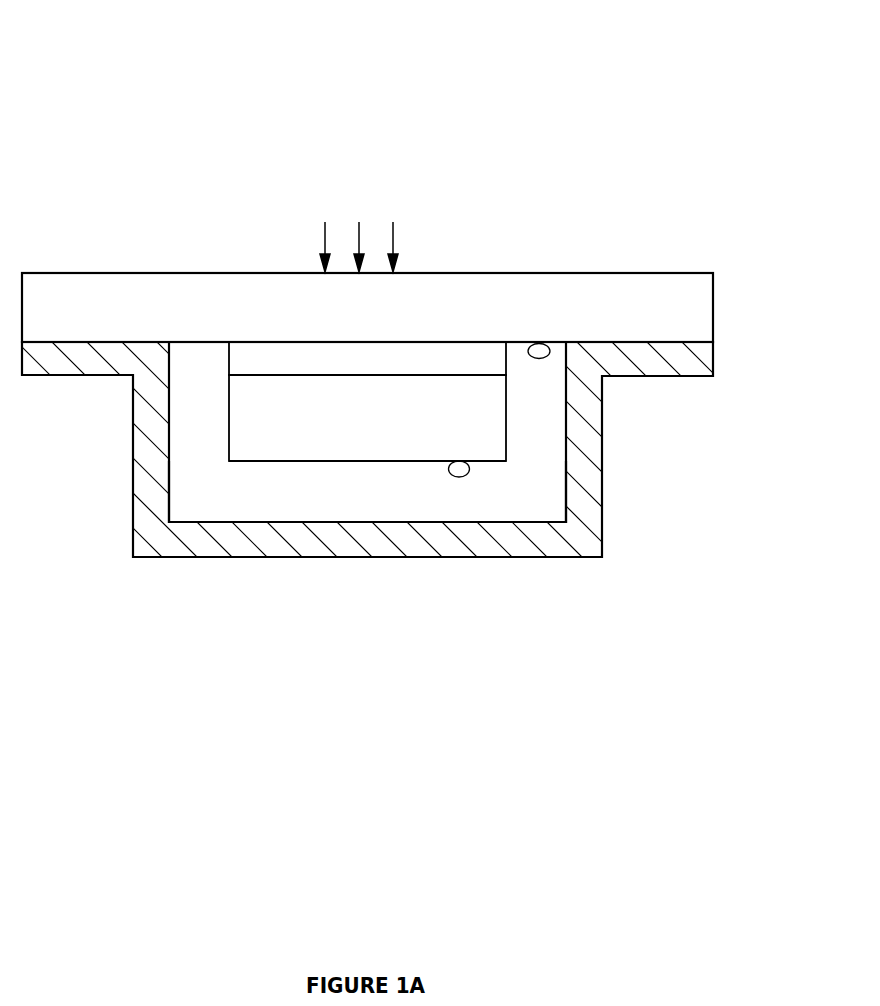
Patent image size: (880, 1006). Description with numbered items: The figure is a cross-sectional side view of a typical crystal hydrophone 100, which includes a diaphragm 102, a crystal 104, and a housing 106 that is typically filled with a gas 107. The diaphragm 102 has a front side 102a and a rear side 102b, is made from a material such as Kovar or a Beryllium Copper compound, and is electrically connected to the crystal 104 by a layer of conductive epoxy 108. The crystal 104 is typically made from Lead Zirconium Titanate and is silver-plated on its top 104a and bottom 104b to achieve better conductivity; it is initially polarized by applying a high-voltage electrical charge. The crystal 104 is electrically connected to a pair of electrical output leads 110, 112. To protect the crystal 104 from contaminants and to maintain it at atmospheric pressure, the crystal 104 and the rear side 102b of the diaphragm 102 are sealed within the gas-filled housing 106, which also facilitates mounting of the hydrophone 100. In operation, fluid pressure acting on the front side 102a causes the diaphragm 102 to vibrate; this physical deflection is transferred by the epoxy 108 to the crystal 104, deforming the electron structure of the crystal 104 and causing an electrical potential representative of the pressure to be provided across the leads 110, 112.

The crystal hydrophone 100 is at (138, 90).
The diaphragm 102 is at (367, 307).
The front side of diaphragm 102a is at (557, 273).
The rear side of diaphragm 102b is at (212, 343).
The crystal 104 is at (367, 418).
The top of crystal 104a is at (288, 376).
The bottom of crystal 104b is at (317, 461).
The housing 106 is at (418, 558).
The gas 107 is at (367, 491).
The conductive epoxy 108 is at (367, 358).
The electrical output lead 110 is at (539, 359).
The electrical output lead 112 is at (459, 477).